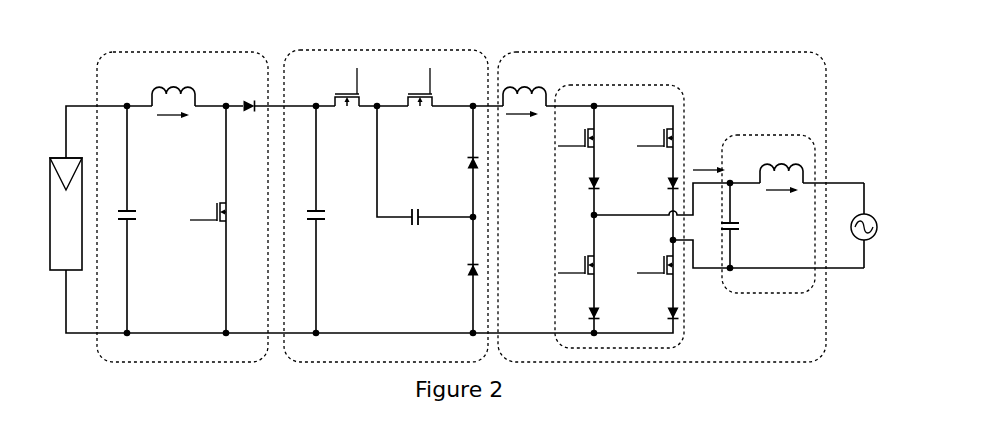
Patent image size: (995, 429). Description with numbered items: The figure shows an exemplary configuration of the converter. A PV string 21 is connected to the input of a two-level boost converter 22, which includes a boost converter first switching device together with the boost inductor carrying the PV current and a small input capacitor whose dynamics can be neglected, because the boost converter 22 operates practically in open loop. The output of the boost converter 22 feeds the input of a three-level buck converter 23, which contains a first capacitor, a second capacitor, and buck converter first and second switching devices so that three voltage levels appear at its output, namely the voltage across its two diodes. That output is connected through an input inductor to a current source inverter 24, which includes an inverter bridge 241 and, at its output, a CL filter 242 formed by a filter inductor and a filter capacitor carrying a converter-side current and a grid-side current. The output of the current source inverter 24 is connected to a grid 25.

The PV string 21 is at (53, 158).
The two-level boost converter 22 is at (184, 52).
The three-level buck converter 23 is at (386, 50).
The current source inverter 24 is at (662, 51).
The inverter bridge 241 is at (686, 90).
The CL filter 242 is at (750, 135).
The grid 25 is at (870, 240).